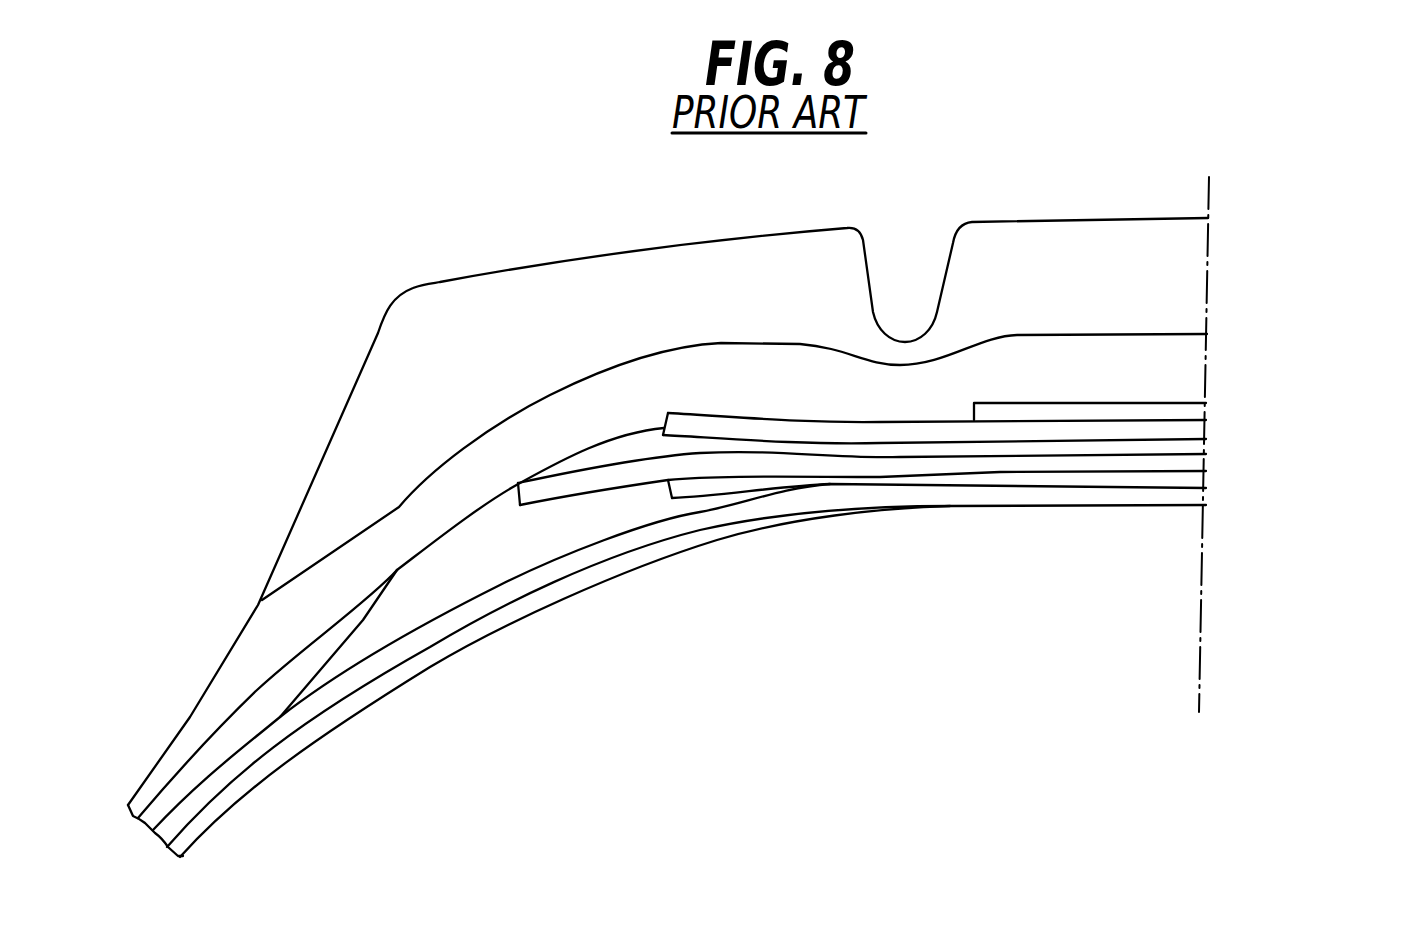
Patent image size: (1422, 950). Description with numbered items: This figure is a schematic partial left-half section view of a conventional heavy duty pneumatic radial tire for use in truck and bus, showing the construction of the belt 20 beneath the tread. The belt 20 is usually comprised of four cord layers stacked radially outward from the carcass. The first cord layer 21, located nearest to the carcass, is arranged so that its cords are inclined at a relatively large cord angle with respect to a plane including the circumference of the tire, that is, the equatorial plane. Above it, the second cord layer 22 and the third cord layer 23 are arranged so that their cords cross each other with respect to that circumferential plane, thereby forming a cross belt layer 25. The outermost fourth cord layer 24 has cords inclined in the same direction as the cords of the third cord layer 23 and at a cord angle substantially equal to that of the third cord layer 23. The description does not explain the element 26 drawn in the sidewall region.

The pneumatic tire 20 is at (769, 537).
The carcass ply 21 is at (1197, 458).
The carcass ply 22 is at (1198, 445).
The belt layer 23 is at (1195, 430).
The belt layer 24 is at (1199, 411).
The belt/ply package 25 is at (741, 605).
The inner liner 26 is at (442, 628).